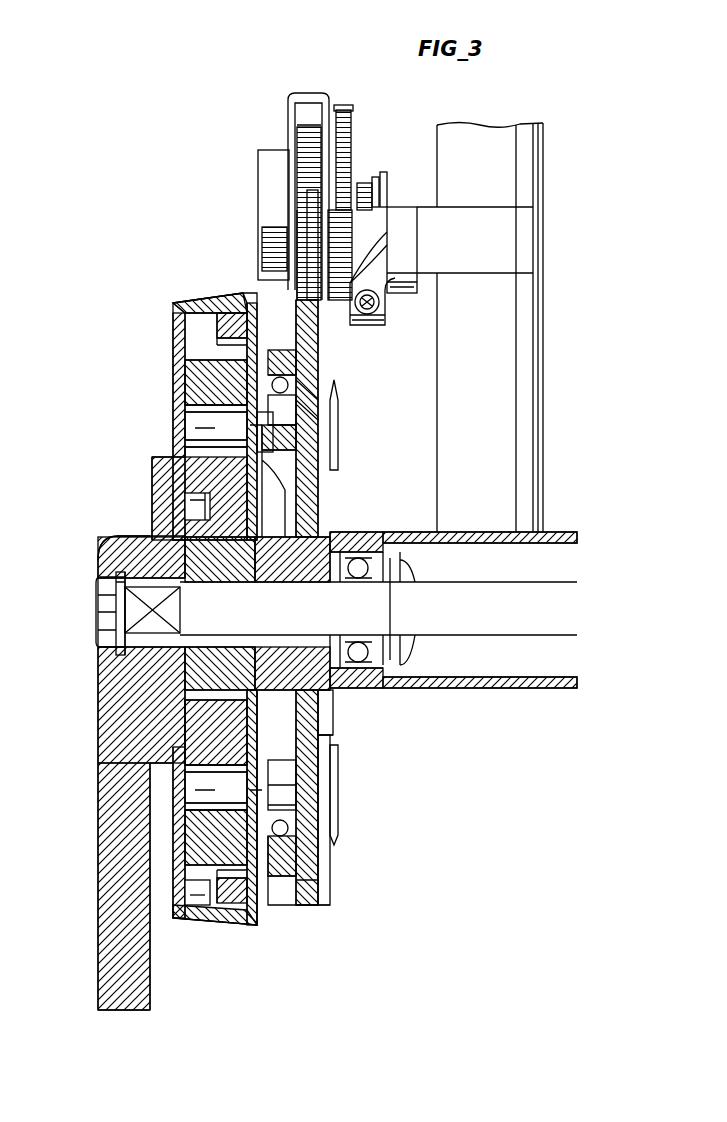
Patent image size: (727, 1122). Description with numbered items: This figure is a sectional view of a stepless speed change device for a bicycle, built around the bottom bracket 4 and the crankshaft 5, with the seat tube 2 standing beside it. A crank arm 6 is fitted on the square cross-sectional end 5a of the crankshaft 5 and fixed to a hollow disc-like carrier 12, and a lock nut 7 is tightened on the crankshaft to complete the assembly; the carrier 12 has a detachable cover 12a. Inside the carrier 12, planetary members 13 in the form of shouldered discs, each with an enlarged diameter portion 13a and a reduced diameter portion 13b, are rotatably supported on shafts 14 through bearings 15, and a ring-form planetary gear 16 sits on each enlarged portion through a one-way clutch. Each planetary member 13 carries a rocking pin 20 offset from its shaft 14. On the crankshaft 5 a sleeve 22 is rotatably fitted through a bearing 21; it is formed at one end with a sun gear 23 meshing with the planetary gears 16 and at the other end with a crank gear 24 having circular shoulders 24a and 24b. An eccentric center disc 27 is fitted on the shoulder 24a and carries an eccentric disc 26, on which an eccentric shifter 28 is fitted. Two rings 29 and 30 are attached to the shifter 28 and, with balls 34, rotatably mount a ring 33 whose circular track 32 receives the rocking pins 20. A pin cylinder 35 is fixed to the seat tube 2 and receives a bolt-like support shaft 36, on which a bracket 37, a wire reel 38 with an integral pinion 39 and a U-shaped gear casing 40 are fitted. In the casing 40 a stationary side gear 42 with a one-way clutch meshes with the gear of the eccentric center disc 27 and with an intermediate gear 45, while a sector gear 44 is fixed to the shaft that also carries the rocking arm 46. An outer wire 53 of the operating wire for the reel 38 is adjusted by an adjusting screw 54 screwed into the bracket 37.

The seat tube 2 is at (526, 367).
The bottom bracket 4 is at (518, 688).
The crankshaft 5 is at (562, 616).
The square cross-sectional end 5a is at (125, 626).
The crank arm 6 is at (100, 912).
The lock nut 7 is at (102, 612).
The carrier 12 is at (176, 318).
The cover 12a is at (228, 318).
The planetary member 13 is at (192, 376).
The enlarged diameter portion 13a is at (185, 508).
The reduced diameter portion 13b is at (160, 495).
The shaft 14 is at (190, 430).
The bearing 15 is at (188, 408).
The planetary gear 16 is at (205, 300).
The rocking pin 20 is at (305, 428).
The bearing 21 is at (115, 665).
The sleeve 22 is at (332, 540).
The sun gear 23 is at (104, 566).
The crank gear 24 is at (340, 838).
The circular shoulder 24a is at (335, 728).
The circular shoulder 24b is at (336, 756).
The eccentric disc 26 is at (306, 402).
The eccentric center disc 27 is at (322, 893).
The eccentric shifter 28 is at (304, 845).
The ring 29 is at (292, 912).
The ring 30 is at (280, 906).
The circular track 32 is at (300, 448).
The ring 33 is at (300, 470).
The balls 34 is at (296, 817).
The pin cylinder 35 is at (522, 243).
The support shaft 36 is at (262, 245).
The bracket 37 is at (383, 178).
The wire reel 38 is at (362, 182).
The pinion 39 is at (333, 285).
The gear casing 40 is at (310, 93).
The stationary side gear 42 is at (302, 215).
The sector gear 44 is at (343, 108).
The intermediate gear 45 is at (300, 125).
The rocking arm 46 is at (298, 238).
The outer wire 53 is at (372, 322).
The adjusting screw 54 is at (381, 303).